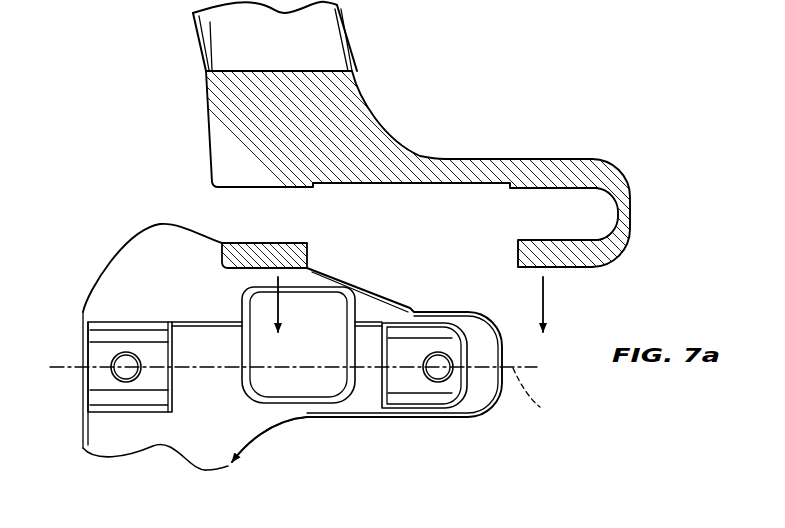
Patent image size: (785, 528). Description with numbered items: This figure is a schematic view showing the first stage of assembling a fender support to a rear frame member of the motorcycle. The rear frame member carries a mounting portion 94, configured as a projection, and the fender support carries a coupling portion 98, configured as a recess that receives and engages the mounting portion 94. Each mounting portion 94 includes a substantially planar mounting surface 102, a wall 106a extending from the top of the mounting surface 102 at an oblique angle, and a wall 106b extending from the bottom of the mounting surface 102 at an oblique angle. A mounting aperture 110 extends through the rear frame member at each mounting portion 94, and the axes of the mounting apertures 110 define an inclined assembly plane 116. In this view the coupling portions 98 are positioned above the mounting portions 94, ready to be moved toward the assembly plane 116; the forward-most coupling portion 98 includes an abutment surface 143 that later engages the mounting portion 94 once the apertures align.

The mounting portion 94 is at (72, 343).
The coupling portion 98 is at (233, 232).
The mounting surface 102 is at (100, 377).
The wall 106a is at (137, 335).
The wall 106b is at (137, 398).
The mounting aperture 110 is at (143, 373).
The assembly plane 116 is at (546, 395).
The abutment surface 143 is at (612, 172).